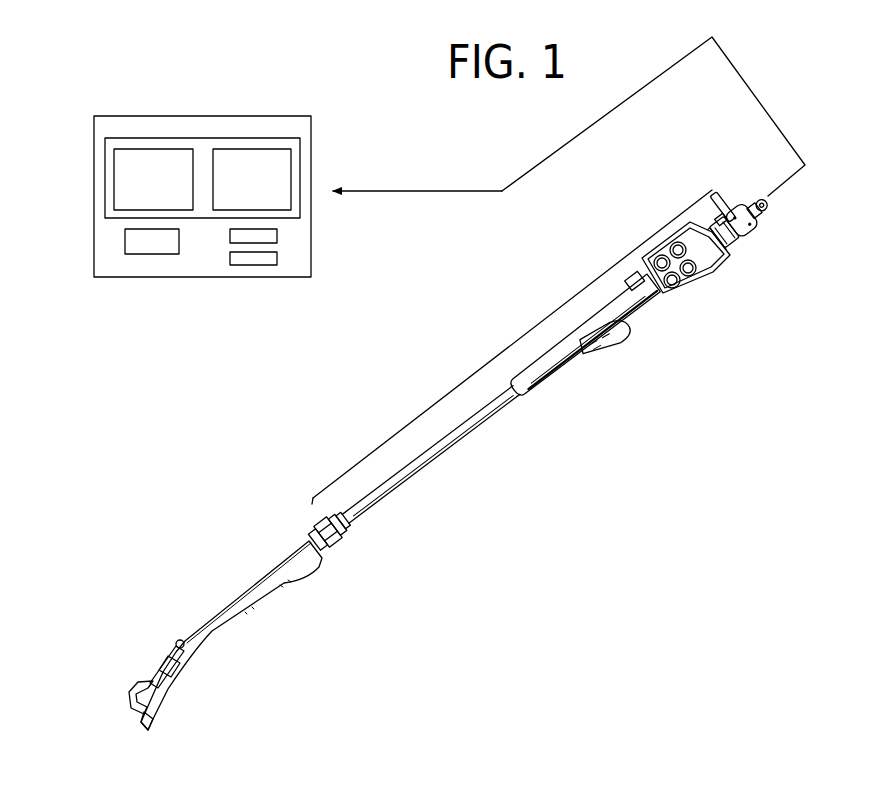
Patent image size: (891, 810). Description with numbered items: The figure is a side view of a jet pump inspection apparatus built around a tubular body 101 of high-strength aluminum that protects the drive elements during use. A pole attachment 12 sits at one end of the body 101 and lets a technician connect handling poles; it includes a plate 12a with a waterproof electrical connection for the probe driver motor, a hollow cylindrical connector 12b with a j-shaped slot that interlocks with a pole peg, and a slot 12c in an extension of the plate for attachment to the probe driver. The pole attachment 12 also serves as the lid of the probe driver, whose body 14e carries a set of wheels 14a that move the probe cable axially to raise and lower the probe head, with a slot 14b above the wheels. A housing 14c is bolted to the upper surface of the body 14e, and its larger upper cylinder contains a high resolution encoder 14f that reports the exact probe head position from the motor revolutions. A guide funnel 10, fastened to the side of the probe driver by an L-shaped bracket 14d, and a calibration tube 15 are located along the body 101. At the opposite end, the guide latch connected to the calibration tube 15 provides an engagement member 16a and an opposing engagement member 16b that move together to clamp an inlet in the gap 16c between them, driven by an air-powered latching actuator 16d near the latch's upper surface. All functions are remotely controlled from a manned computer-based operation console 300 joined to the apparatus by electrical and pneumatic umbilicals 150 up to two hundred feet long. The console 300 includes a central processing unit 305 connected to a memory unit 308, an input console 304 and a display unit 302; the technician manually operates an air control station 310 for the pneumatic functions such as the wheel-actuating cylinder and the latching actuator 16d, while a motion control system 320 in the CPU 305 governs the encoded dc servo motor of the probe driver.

The guide funnel 10 is at (612, 352).
The pole attachment 12 is at (749, 173).
The plate 12a is at (768, 220).
The connector 12b is at (752, 190).
The slot 12c is at (712, 196).
The set of wheels 14a is at (714, 295).
The slot 14b is at (732, 260).
The housing 14c is at (743, 247).
The L-shaped bracket 14d is at (653, 303).
The body 14e is at (717, 280).
The high resolution encoder 14f is at (723, 222).
The calibration tube 15 is at (287, 503).
The engagement member 16a is at (125, 685).
The opposing engagement member 16b is at (148, 727).
The gap 16c is at (128, 713).
The latching actuator 16d is at (300, 593).
The body 101 is at (520, 345).
The electrical and pneumatic umbilicals 150 is at (770, 112).
The operation console 300 is at (311, 162).
The display unit 302 is at (278, 235).
The input console 304 is at (278, 258).
The central processing unit 305 is at (187, 138).
The memory unit 308 is at (125, 244).
The air control station 310 is at (143, 148).
The motion control system 320 is at (242, 148).